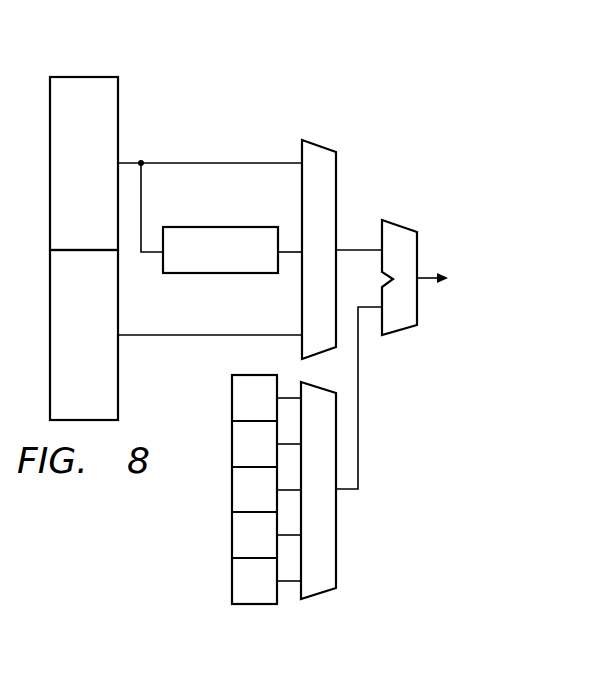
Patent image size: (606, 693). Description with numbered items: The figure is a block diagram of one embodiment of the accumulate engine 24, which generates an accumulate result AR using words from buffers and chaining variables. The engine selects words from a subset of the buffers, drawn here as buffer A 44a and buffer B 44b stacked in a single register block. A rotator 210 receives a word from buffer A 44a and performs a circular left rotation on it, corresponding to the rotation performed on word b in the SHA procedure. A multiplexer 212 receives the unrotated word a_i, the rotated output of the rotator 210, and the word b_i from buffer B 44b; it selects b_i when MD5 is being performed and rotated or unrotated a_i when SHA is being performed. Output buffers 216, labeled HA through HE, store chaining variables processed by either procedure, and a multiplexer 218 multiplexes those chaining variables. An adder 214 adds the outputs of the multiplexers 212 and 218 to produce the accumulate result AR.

The accumulate engine 24 is at (210, 86).
The buffer A 44a is at (63, 197).
The buffer B 44b is at (63, 370).
The rotator 210 is at (222, 227).
The multiplexer 212 is at (318, 145).
The adder 214 is at (400, 222).
The output buffers 216 is at (252, 612).
The multiplexer 218 is at (318, 598).